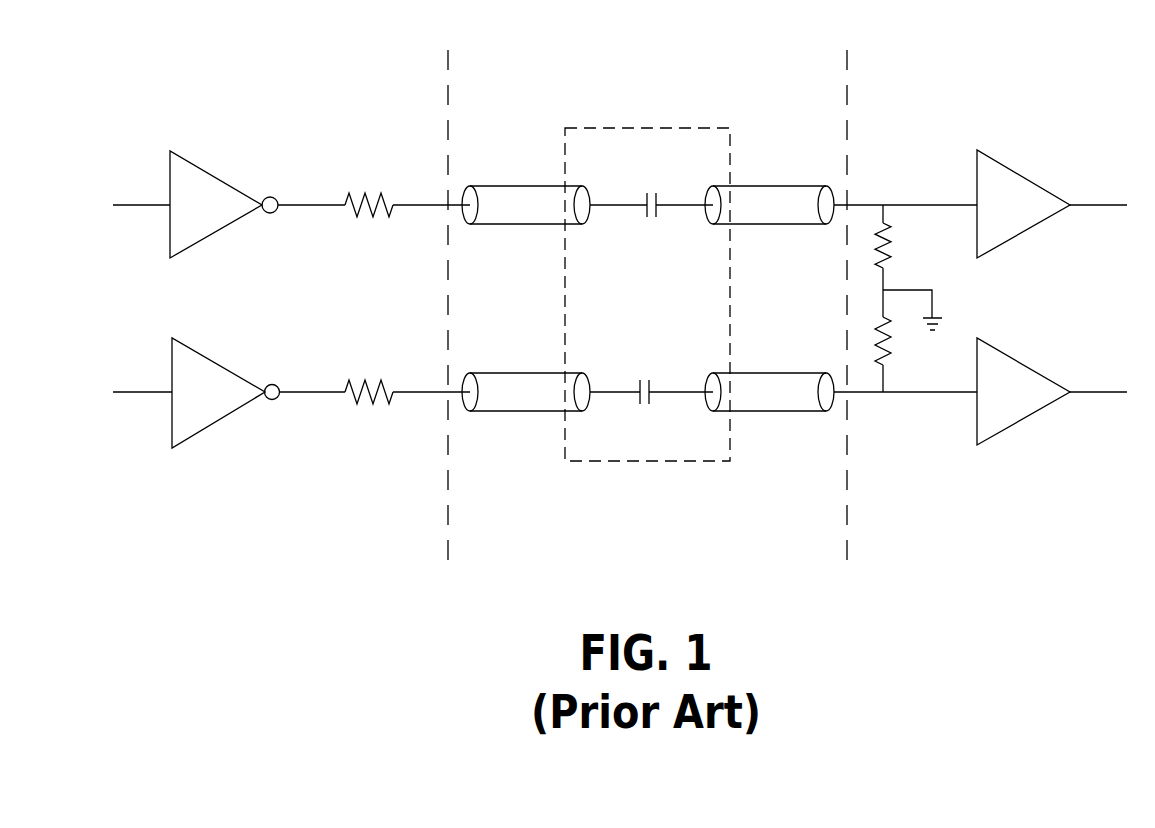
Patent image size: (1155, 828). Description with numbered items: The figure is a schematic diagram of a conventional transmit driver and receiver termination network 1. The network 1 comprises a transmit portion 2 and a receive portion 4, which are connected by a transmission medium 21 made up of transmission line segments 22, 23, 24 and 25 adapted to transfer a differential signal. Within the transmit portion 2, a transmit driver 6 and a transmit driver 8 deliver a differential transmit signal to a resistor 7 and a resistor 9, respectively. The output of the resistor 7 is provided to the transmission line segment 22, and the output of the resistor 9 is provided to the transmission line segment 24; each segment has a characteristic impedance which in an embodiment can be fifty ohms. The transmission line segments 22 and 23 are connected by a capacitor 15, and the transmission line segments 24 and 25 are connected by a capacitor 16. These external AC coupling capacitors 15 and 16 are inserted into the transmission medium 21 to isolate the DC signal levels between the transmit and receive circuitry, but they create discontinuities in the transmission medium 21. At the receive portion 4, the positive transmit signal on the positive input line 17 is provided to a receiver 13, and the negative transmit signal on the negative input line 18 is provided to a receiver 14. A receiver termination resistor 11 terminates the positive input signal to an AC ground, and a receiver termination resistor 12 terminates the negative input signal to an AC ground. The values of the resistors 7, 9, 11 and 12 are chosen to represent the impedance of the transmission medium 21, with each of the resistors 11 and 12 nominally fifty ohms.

The network 1 is at (270, 30).
The transmit portion 2 is at (383, 86).
The receive portion 4 is at (944, 64).
The transmit driver 6 is at (198, 163).
The resistor 7 is at (358, 193).
The transmit driver 8 is at (200, 351).
The resistor 9 is at (357, 400).
The receiver termination resistor 11 is at (893, 260).
The receiver termination resistor 12 is at (888, 337).
The receiver 13 is at (1007, 165).
The receiver 14 is at (1008, 358).
The capacitor 15 is at (654, 200).
The capacitor 16 is at (648, 390).
The positive receiver input line INP 17 is at (958, 205).
The negative receiver input line INN 18 is at (952, 393).
The transmission medium 21 is at (662, 300).
The transmission line segment 22 is at (492, 186).
The transmission line segment 23 is at (735, 187).
The transmission line segment 24 is at (485, 373).
The transmission line segment 25 is at (742, 373).